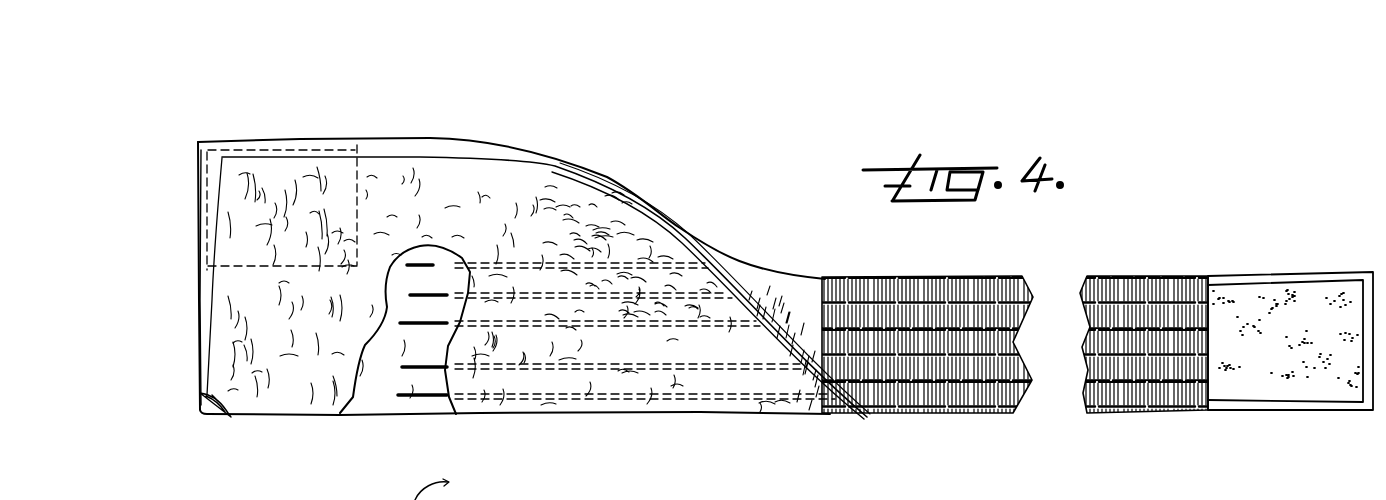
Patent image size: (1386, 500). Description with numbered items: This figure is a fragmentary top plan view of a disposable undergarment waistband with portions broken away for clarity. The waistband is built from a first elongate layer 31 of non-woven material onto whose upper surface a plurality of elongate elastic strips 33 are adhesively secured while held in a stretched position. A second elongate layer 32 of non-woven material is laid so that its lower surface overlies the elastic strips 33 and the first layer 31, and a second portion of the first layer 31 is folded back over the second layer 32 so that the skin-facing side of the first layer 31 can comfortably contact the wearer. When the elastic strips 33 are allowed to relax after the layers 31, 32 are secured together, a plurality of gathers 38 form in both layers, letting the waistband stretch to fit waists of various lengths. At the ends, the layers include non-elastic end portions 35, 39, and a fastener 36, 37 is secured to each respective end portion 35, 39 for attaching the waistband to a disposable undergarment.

The first elongate layer 31 is at (200, 143).
The second elongate layer 32 is at (231, 418).
The elongate elastic strips 33 is at (438, 323).
The non-elastic end portion 35 is at (207, 352).
The fastener 36 is at (298, 204).
The fastener 37 is at (1337, 295).
The gathers 38 is at (1178, 316).
The non-elastic end portion 39 is at (1360, 405).